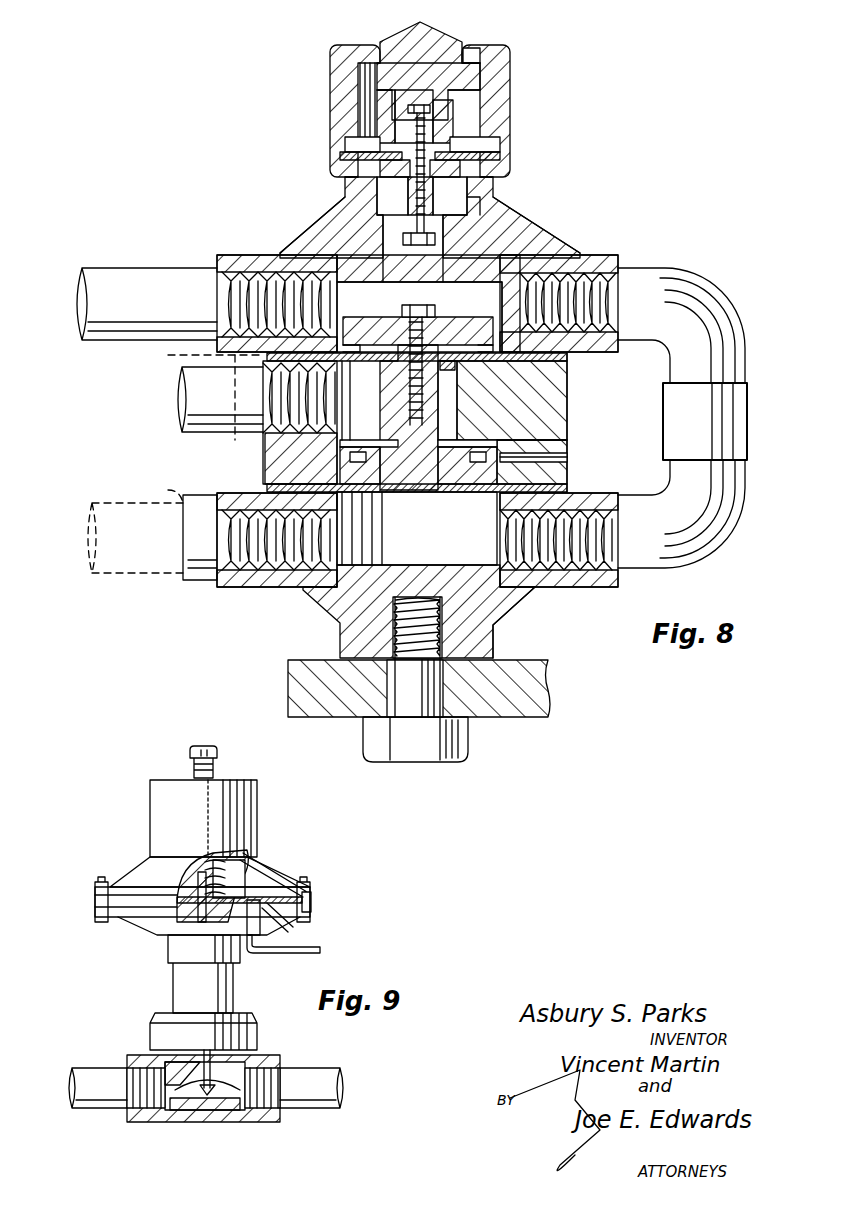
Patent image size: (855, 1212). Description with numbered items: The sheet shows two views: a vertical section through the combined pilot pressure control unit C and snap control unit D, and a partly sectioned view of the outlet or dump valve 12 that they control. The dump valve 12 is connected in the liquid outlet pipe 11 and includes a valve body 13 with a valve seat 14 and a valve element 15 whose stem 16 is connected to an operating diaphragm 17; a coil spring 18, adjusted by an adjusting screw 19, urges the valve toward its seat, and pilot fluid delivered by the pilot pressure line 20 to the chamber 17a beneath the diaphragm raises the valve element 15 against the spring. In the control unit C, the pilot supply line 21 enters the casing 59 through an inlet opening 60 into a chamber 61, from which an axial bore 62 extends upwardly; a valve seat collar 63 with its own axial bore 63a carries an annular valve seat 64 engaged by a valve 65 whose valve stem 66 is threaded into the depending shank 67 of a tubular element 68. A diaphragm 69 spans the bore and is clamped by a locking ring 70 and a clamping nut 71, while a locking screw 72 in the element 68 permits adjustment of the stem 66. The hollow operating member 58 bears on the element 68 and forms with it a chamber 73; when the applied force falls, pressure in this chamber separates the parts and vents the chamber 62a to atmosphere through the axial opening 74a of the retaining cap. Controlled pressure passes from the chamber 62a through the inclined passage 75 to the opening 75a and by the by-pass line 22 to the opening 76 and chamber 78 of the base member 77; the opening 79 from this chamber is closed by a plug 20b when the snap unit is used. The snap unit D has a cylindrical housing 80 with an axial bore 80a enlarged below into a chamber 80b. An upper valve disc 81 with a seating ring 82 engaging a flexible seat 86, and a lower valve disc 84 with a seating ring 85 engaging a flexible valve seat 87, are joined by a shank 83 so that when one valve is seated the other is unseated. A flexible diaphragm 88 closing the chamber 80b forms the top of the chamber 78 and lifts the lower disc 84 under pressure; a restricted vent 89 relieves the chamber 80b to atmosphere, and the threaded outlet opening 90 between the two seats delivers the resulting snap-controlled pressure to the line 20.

In FIG. 9, the liquid outlet pipe 11 is at (85, 1068).
In FIG. 9, the liquid outlet or dump valve 12 is at (131, 1053).
In FIG. 9, the valve body 13 is at (275, 1056).
In FIG. 8, the valve seat 14 is at (505, 55).
In FIG. 9, the valve seat 14 is at (205, 1120).
In FIG. 9, the valve element 15 is at (172, 1122).
In FIG. 9, the stem 16 is at (160, 932).
In FIG. 9, the operating diaphragm 17 is at (272, 882).
In FIG. 9, the chamber 17a is at (285, 917).
In FIG. 9, the coil spring 18 is at (228, 850).
In FIG. 9, the adjusting screw 19 is at (190, 752).
In FIG. 8, the pilot pressure line 20 is at (178, 418).
In FIG. 9, the pilot pressure line 20 is at (281, 958).
In FIG. 8, the plug 20b is at (196, 424).
In FIG. 8, the pilot pressure supply line 21 is at (140, 285).
In FIG. 8, the by-pass line 22 is at (730, 305).
In FIG. 8, the operating member 58 is at (406, 27).
In FIG. 8, the casing 59 is at (498, 222).
In FIG. 8, the inlet opening 60 is at (246, 253).
In FIG. 8, the chamber 61 is at (340, 256).
In FIG. 8, the axial bore 62 is at (493, 190).
In FIG. 8, the chamber 62a is at (348, 188).
In FIG. 8, the valve seat collar 63 is at (380, 225).
In FIG. 8, the axial bore 63a is at (417, 300).
In FIG. 8, the annular valve seat 64 is at (477, 210).
In FIG. 8, the valve 65 is at (450, 196).
In FIG. 8, the valve stem 66 is at (455, 126).
In FIG. 8, the depending shank 67 is at (392, 196).
In FIG. 8, the tubular element 68 is at (448, 95).
In FIG. 8, the diaphragm 69 is at (348, 140).
In FIG. 8, the locking ring 70 is at (486, 142).
In FIG. 8, the clamping nut 71 is at (358, 157).
In FIG. 8, the locking screw 72 is at (482, 78).
In FIG. 8, the chamber 73 is at (462, 108).
In FIG. 8, the axial opening 74a is at (472, 50).
In FIG. 8, the inclined passage 75 is at (522, 248).
In FIG. 8, the opening 75a is at (590, 258).
In FIG. 8, the opening 76 is at (538, 585).
In FIG. 8, the base member 77 is at (500, 603).
In FIG. 8, the chamber 78 is at (318, 597).
In FIG. 8, the opening 79 is at (293, 563).
In FIG. 8, the cylindrical housing 80 is at (568, 443).
In FIG. 8, the axial bore 80a is at (470, 392).
In FIG. 8, the chamber 80b is at (340, 443).
In FIG. 8, the upper valve disc 81 is at (470, 320).
In FIG. 8, the annular valve seating ring 82 is at (468, 372).
In FIG. 8, the shank 83 is at (445, 420).
In FIG. 8, the lower valve disc 84 is at (443, 503).
In FIG. 8, the annular valve seating ring 85 is at (345, 463).
In FIG. 8, the flexible seat 86 is at (514, 372).
In FIG. 8, the flexible valve seat 87 is at (548, 433).
In FIG. 8, the flexible diaphragm 88 is at (401, 503).
In FIG. 8, the restricted vent 89 is at (568, 458).
In FIG. 8, the threaded outlet opening 90 is at (265, 378).
In FIG. 8, the pilot pressure control unit C is at (345, 275).
In FIG. 8, the snap control unit D is at (576, 400).